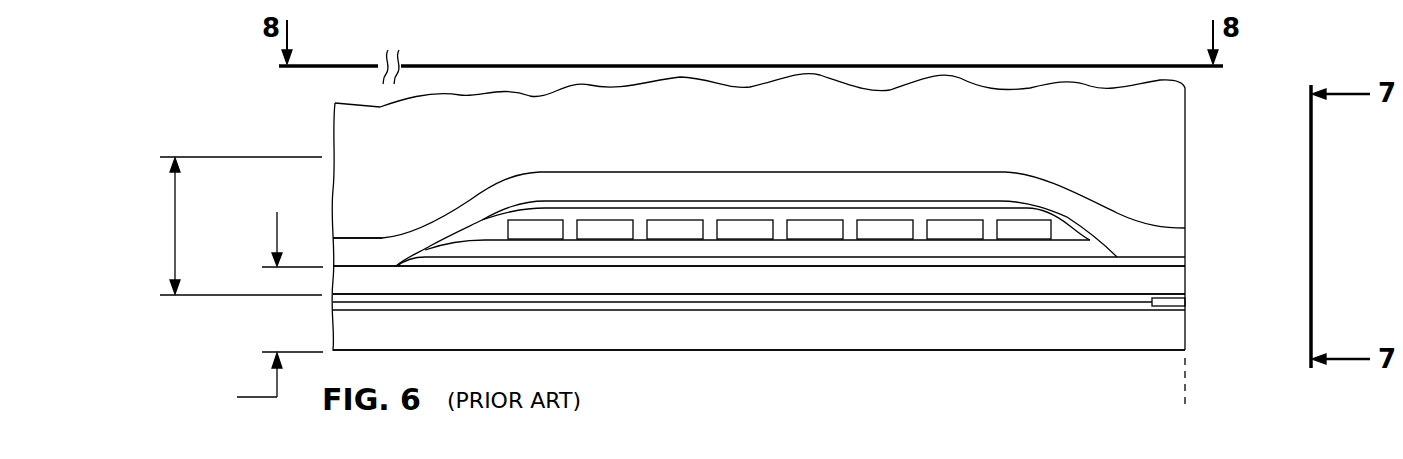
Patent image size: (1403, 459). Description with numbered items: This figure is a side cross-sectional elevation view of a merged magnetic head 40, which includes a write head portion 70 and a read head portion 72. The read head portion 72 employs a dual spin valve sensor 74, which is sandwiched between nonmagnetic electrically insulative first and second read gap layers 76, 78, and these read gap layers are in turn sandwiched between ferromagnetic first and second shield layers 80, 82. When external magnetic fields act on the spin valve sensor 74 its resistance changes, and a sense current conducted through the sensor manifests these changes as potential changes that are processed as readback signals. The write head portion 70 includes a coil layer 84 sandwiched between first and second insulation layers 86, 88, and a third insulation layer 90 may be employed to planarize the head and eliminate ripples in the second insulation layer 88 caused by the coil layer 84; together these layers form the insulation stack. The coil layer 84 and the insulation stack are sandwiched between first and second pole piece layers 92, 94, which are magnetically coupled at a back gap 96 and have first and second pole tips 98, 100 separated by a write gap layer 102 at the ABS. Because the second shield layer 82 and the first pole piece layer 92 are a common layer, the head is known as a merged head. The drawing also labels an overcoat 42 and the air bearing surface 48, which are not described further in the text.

The merged magnetic head 40 is at (308, 114).
The overcoat layer 42 is at (1168, 118).
The air bearing surface (ABS) 48 is at (1187, 398).
The write head portion 70 is at (224, 226).
The read head portion 72 is at (224, 381).
The dual spin valve sensor 74 is at (1185, 301).
The first read gap layer 76 is at (831, 311).
The second read gap layer 78 is at (797, 294).
The first shield layer 80 is at (913, 335).
The second shield layer 82 is at (1023, 283).
The coil layer 84 is at (812, 225).
The first insulation layer 86 is at (685, 248).
The second insulation layer 88 is at (1066, 232).
The third insulation layer 90 is at (577, 205).
The first pole piece layer 92 is at (1030, 310).
The second pole piece layer 94 is at (930, 183).
The back gap 96 is at (373, 260).
The first pole tip 98 is at (1185, 283).
The second pole tip 100 is at (1180, 236).
The write gap layer 102 is at (1185, 262).